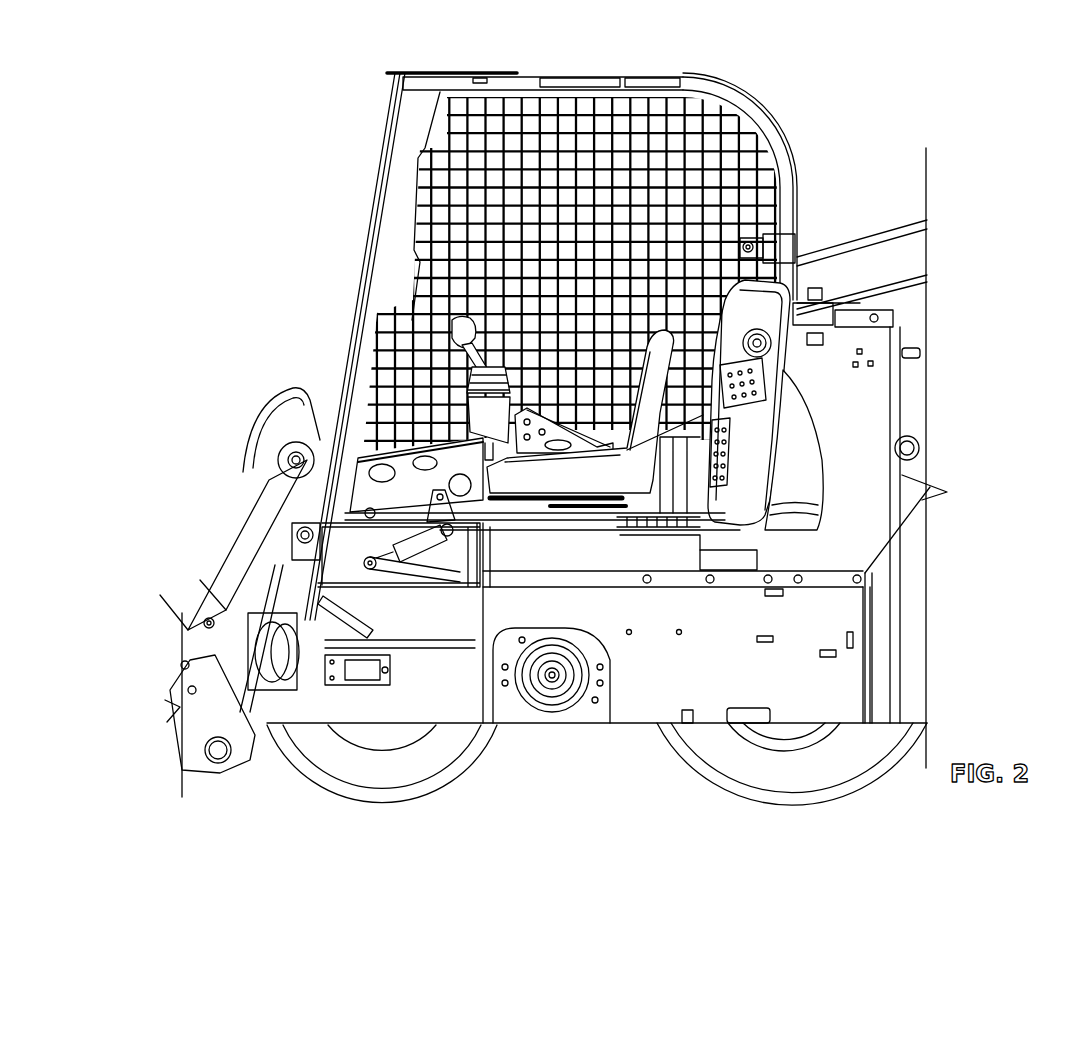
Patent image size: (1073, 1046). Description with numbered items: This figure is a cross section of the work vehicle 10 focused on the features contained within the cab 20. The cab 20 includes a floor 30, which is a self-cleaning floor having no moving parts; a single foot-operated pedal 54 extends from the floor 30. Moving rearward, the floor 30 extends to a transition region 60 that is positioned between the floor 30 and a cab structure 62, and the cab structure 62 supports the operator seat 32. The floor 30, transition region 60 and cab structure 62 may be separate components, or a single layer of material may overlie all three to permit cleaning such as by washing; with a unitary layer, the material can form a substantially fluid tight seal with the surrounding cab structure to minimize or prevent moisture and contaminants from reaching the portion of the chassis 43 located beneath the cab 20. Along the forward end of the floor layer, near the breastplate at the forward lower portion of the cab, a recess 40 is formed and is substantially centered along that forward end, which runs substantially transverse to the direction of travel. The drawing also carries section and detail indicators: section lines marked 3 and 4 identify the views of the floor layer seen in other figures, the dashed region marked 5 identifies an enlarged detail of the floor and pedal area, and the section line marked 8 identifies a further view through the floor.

The work vehicle 10 is at (737, 55).
The cab 20 is at (762, 106).
The floor 30 is at (258, 588).
The operator seat 32 is at (606, 488).
The recess 40 is at (305, 662).
The chassis 43 is at (676, 680).
The foot-operated pedal 54 is at (360, 620).
The transition region 60 is at (492, 558).
The cab structure 62 is at (645, 510).
The section line 3 is at (240, 118).
The section line 4 is at (222, 365).
The detail region 5 is at (237, 592).
The section line 8 is at (258, 797).